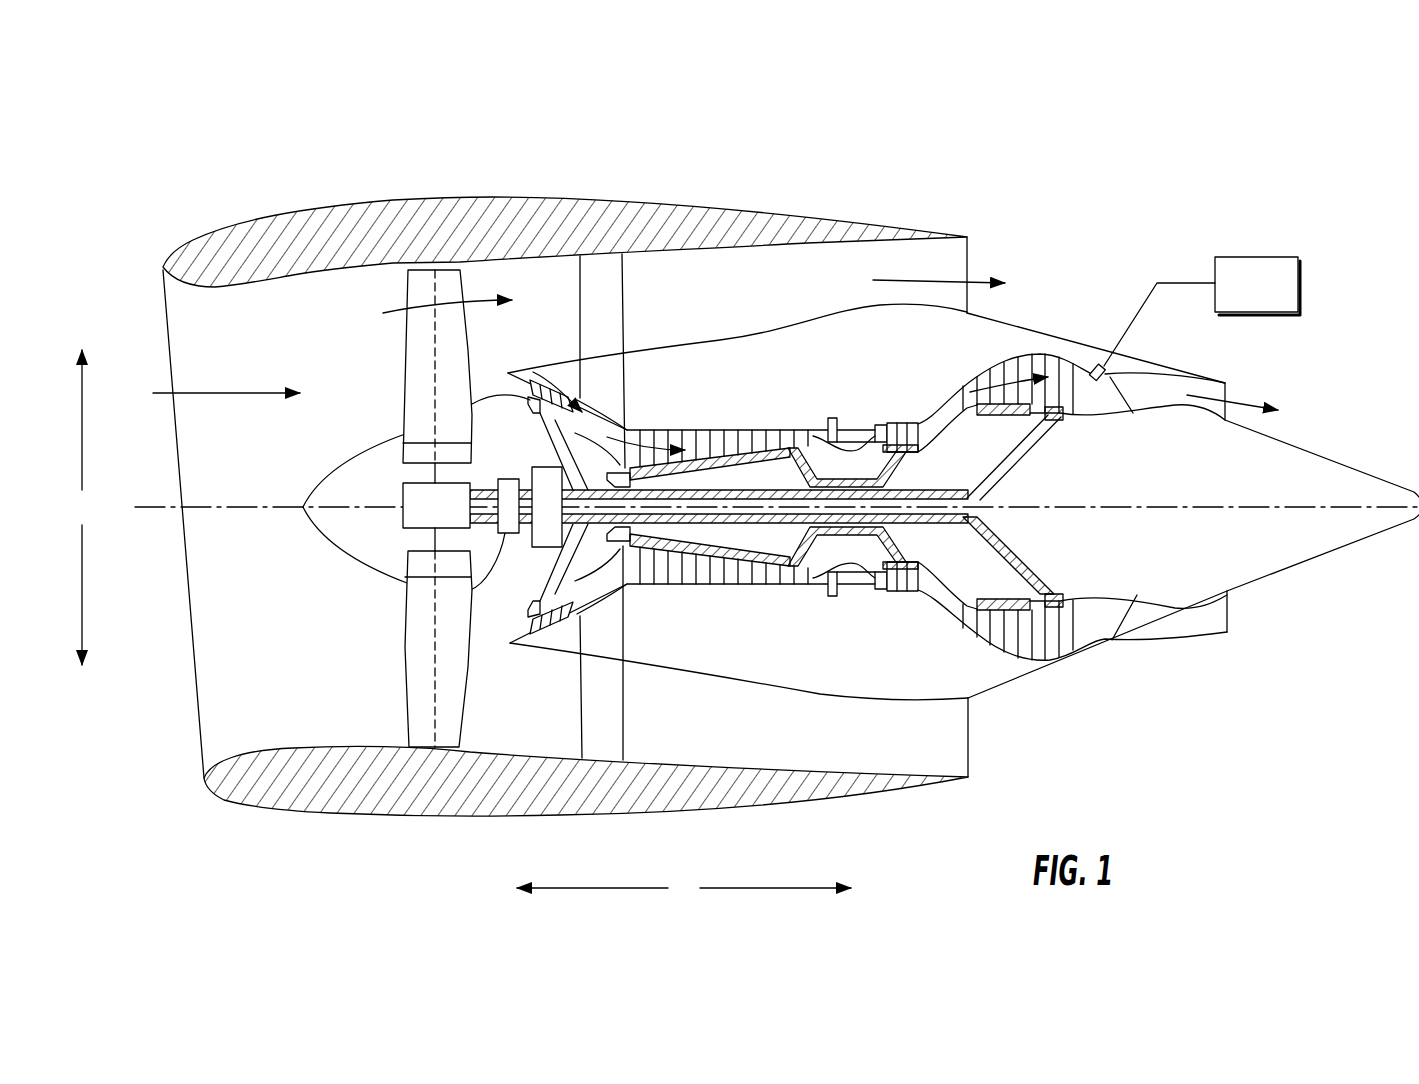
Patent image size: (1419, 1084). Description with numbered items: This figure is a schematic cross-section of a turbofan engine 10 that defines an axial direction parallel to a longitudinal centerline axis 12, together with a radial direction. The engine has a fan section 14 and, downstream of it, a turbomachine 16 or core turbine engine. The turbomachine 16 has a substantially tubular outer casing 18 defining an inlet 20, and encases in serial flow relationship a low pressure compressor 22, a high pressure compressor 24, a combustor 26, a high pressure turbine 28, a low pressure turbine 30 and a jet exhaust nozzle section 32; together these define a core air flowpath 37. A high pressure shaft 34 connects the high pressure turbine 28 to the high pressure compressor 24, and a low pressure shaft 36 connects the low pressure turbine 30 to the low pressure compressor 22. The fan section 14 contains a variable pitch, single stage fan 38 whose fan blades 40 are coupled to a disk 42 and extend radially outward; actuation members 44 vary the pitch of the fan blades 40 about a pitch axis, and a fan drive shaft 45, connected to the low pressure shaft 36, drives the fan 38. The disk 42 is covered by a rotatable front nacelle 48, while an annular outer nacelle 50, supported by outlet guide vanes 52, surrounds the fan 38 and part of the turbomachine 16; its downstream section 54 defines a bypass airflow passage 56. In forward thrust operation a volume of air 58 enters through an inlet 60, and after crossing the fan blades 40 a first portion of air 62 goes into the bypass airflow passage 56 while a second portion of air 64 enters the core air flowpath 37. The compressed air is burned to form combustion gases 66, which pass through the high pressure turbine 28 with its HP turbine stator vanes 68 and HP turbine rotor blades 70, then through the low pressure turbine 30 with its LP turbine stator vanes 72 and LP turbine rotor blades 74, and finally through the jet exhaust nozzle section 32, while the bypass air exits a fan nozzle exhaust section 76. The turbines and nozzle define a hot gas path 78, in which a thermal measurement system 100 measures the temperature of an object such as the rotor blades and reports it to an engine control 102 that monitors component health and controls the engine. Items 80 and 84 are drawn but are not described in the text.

The turbofan engine 10 is at (1132, 212).
The longitudinal centerline axis 12 is at (1157, 507).
The fan section 14 is at (449, 155).
The turbomachine 16 is at (795, 382).
The outer casing 18 is at (803, 693).
The inlet 20 is at (522, 628).
The low pressure compressor 22 is at (578, 602).
The high pressure compressor 24 is at (657, 565).
The combustor 26 is at (852, 582).
The high pressure turbine 28 is at (925, 590).
The low pressure turbine 30 is at (1056, 660).
The jet exhaust nozzle section 32 is at (1133, 633).
The high pressure shaft 34 is at (841, 484).
The low pressure shaft 36 is at (923, 490).
The core air flowpath 37 is at (944, 613).
The fan 38 is at (338, 553).
The fan blades 40 is at (403, 678).
The disk 42 is at (423, 457).
The actuation members 44 is at (403, 493).
The fan drive shaft 45 is at (480, 490).
The rotatable front nacelle 48 is at (305, 524).
The outer nacelle 50 is at (460, 820).
The outlet guide vanes 52 is at (623, 290).
The downstream section 54 is at (903, 237).
The bypass airflow passage 56 is at (786, 298).
The volume of air 58 is at (230, 392).
The inlet 60 is at (197, 750).
The first portion of air 62 is at (425, 300).
The second portion of air 64 is at (490, 385).
The combustion gases 66 is at (900, 438).
The HP turbine stator vanes 68 is at (902, 595).
The HP turbine rotor blades 70 is at (890, 577).
The LP turbine stator vanes 72 is at (973, 637).
The LP turbine rotor blades 74 is at (975, 627).
The fan nozzle exhaust section 76 is at (970, 263).
The hot gas path 78 is at (941, 391).
The fan hub spinner 80 is at (407, 608).
The gearbox 84 is at (560, 468).
The thermal measurement system 100 is at (1096, 363).
The engine control 102 is at (1230, 301).